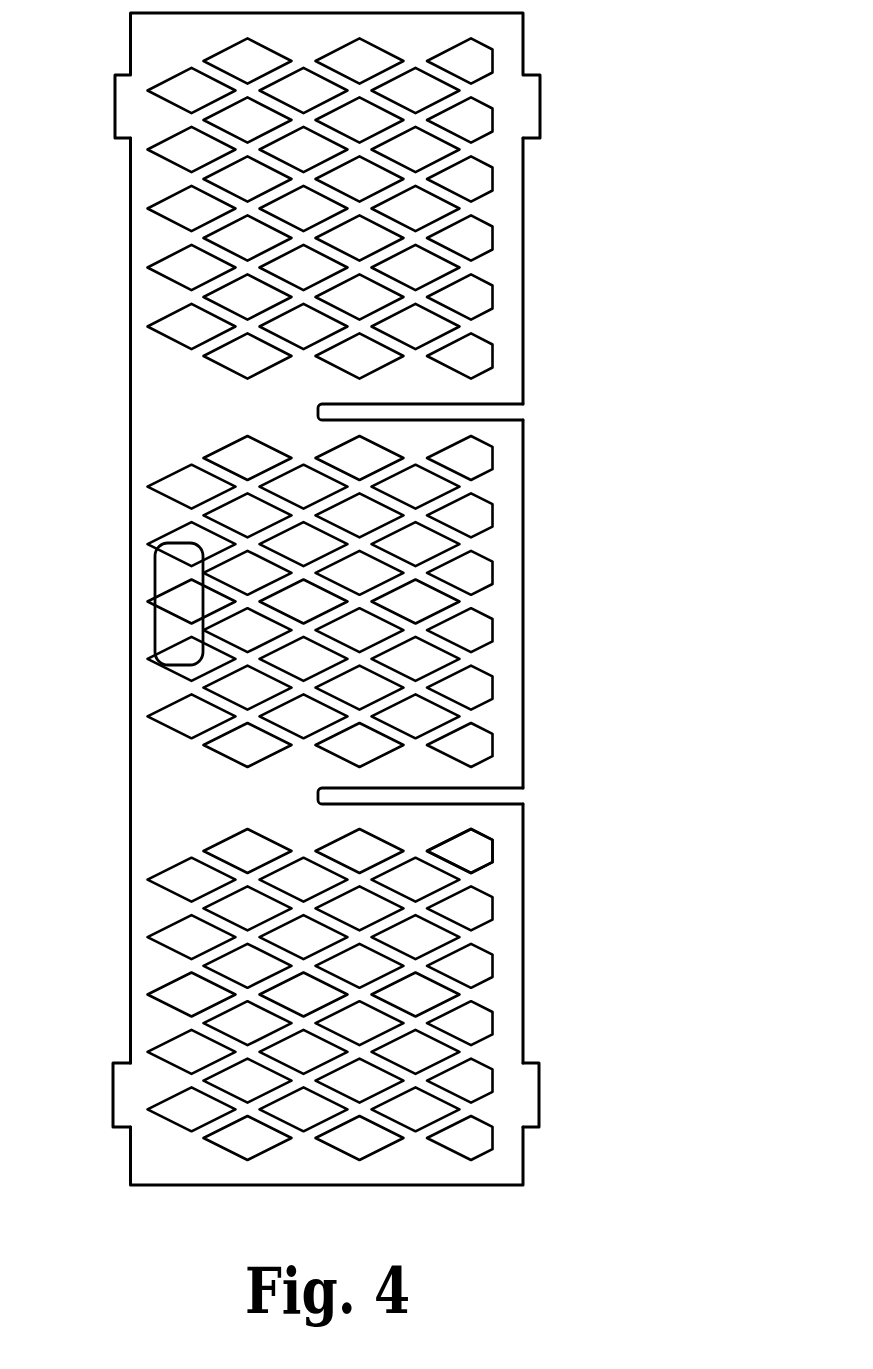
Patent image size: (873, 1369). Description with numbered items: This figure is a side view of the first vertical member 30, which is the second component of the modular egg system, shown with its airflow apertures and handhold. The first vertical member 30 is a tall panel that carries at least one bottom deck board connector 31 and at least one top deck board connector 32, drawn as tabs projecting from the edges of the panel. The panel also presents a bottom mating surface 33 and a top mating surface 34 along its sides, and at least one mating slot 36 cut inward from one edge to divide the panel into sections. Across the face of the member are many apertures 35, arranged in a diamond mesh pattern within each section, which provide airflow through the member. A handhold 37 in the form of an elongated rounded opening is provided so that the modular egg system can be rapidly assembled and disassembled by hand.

The first vertical member 30 is at (600, 262).
The bottom deck board connector 31 is at (528, 1093).
The top deck board connector 32 is at (122, 1093).
The bottom mating surface 33 is at (525, 1045).
The top mating surface 34 is at (128, 794).
The aperture 35 is at (477, 855).
The mating slot 36 is at (508, 797).
The handhold 37 is at (172, 603).